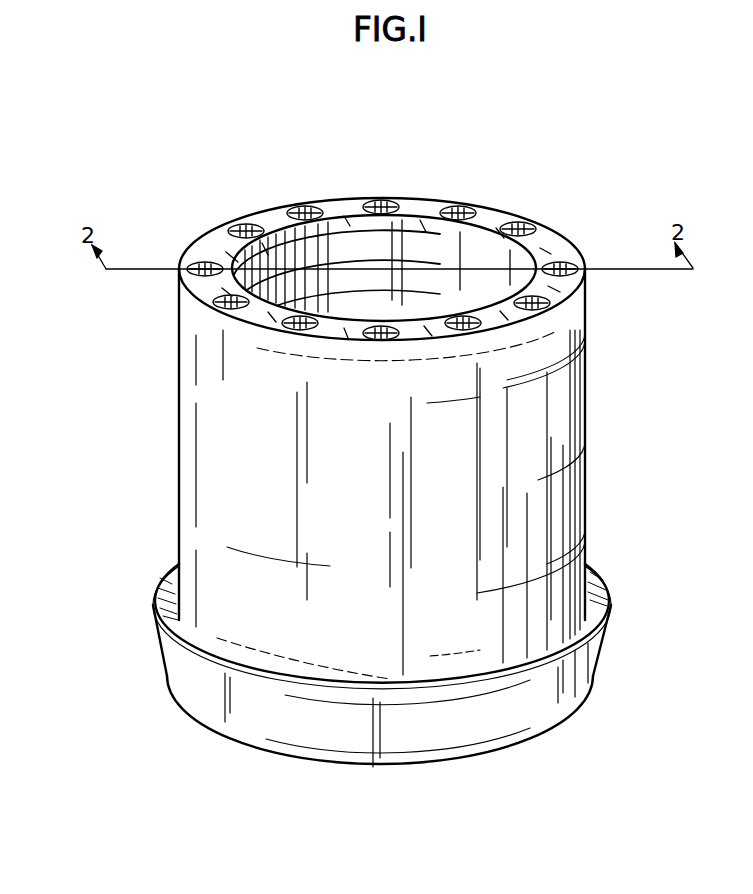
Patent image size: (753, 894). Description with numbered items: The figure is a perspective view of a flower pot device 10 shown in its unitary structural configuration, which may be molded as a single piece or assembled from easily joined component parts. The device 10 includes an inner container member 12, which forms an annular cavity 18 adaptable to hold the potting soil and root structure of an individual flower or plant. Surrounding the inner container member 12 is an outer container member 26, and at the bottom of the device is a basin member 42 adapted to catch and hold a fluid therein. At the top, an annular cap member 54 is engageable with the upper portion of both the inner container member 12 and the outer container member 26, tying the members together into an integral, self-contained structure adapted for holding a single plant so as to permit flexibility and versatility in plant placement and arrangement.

The flower pot device 10 is at (595, 438).
The inner container member 12 is at (421, 236).
The annular cavity 18 is at (330, 257).
The outer container member 26 is at (233, 535).
The basin member 42 is at (243, 717).
The annular cap member 54 is at (211, 250).